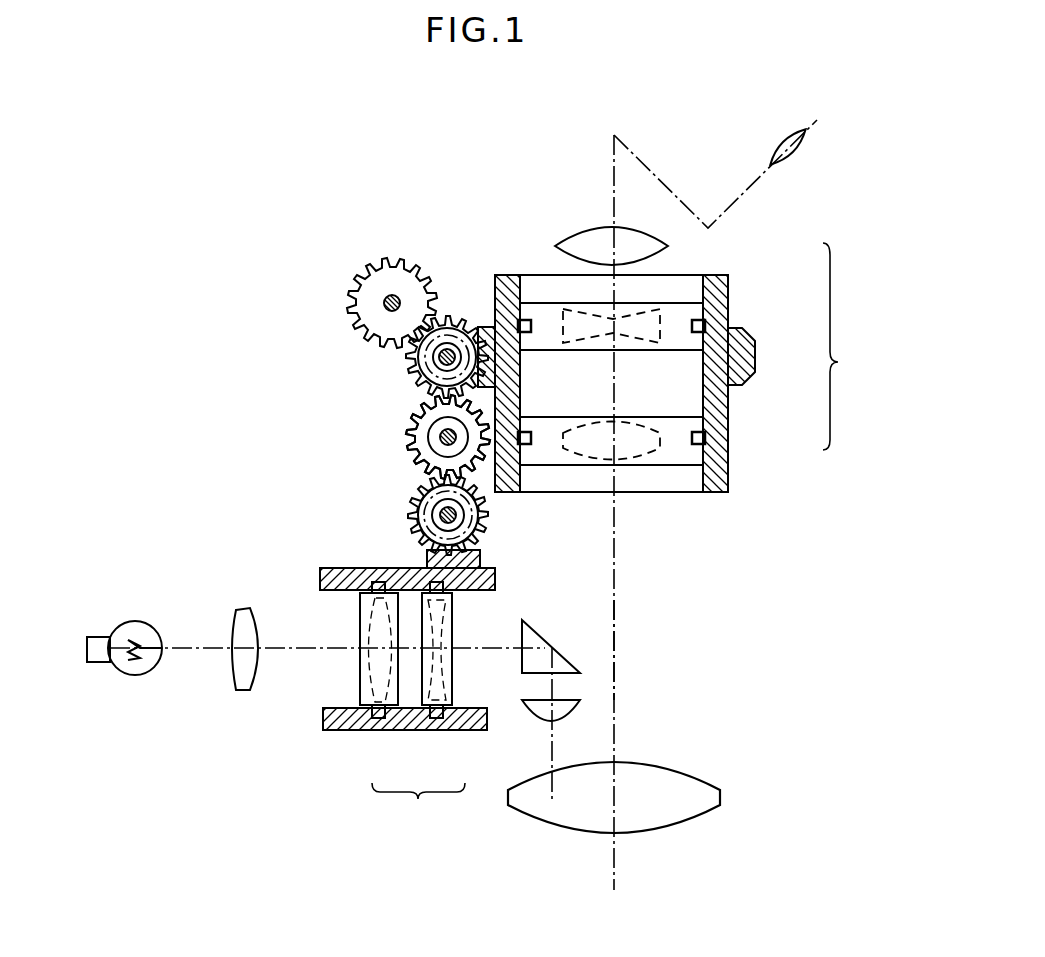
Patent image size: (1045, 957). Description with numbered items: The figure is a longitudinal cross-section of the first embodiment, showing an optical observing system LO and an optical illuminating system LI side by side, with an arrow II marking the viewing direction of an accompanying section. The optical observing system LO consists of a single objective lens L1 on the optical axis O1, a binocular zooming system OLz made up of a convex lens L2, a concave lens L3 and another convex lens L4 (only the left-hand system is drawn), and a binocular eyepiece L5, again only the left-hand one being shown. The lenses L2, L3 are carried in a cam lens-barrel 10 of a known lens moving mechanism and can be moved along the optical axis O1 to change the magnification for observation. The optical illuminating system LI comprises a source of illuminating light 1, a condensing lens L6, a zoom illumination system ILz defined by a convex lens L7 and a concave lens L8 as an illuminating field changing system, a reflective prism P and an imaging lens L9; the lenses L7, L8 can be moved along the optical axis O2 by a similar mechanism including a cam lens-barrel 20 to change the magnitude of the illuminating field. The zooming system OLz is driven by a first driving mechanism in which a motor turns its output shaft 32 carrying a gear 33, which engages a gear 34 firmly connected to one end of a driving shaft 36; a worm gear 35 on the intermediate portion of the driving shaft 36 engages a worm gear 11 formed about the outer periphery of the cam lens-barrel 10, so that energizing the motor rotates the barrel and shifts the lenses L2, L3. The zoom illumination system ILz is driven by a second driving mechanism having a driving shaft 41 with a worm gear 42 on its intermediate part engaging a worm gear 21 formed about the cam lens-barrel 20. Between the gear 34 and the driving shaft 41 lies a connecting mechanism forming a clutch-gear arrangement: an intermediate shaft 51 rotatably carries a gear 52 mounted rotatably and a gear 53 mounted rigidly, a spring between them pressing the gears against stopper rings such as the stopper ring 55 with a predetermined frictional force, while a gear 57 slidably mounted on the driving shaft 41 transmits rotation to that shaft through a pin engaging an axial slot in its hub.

The source of illuminating light 1 is at (132, 676).
The cam lens-barrel 10 is at (720, 478).
The worm gear 11 is at (752, 367).
The cam lens-barrel 20 is at (320, 733).
The worm gear 21 is at (482, 570).
The output shaft 32 is at (383, 304).
The gear 33 is at (402, 292).
The gear 34 is at (448, 340).
The worm gear 35 is at (420, 362).
The driving shaft 36 is at (432, 372).
The driving shaft 41 is at (456, 516).
The worm gear 42 is at (470, 530).
The intermediate shaft 51 is at (440, 441).
The gear 52 is at (410, 430).
The gear 53 is at (391, 437).
The stopper ring 55 is at (425, 498).
The gear 57 is at (428, 538).
The objective lens L1 is at (700, 797).
The convex lens L2 is at (720, 428).
The concave lens L3 is at (720, 313).
The convex lens L4 is at (655, 248).
The binocular eyepiece L5 is at (800, 162).
The condensing lens L6 is at (248, 690).
The convex lens L7 is at (388, 730).
The concave lens L8 is at (437, 730).
The imaging lens L9 is at (536, 708).
The reflective prism P is at (540, 640).
The optical axis O1 is at (616, 697).
The optical axis O2 is at (295, 652).
The binocular zooming system OLz is at (858, 346).
The zoom illumination system ILz is at (418, 810).
The optical observing system LO is at (704, 590).
The optical illuminating system LI is at (285, 750).
The section line II is at (300, 422).